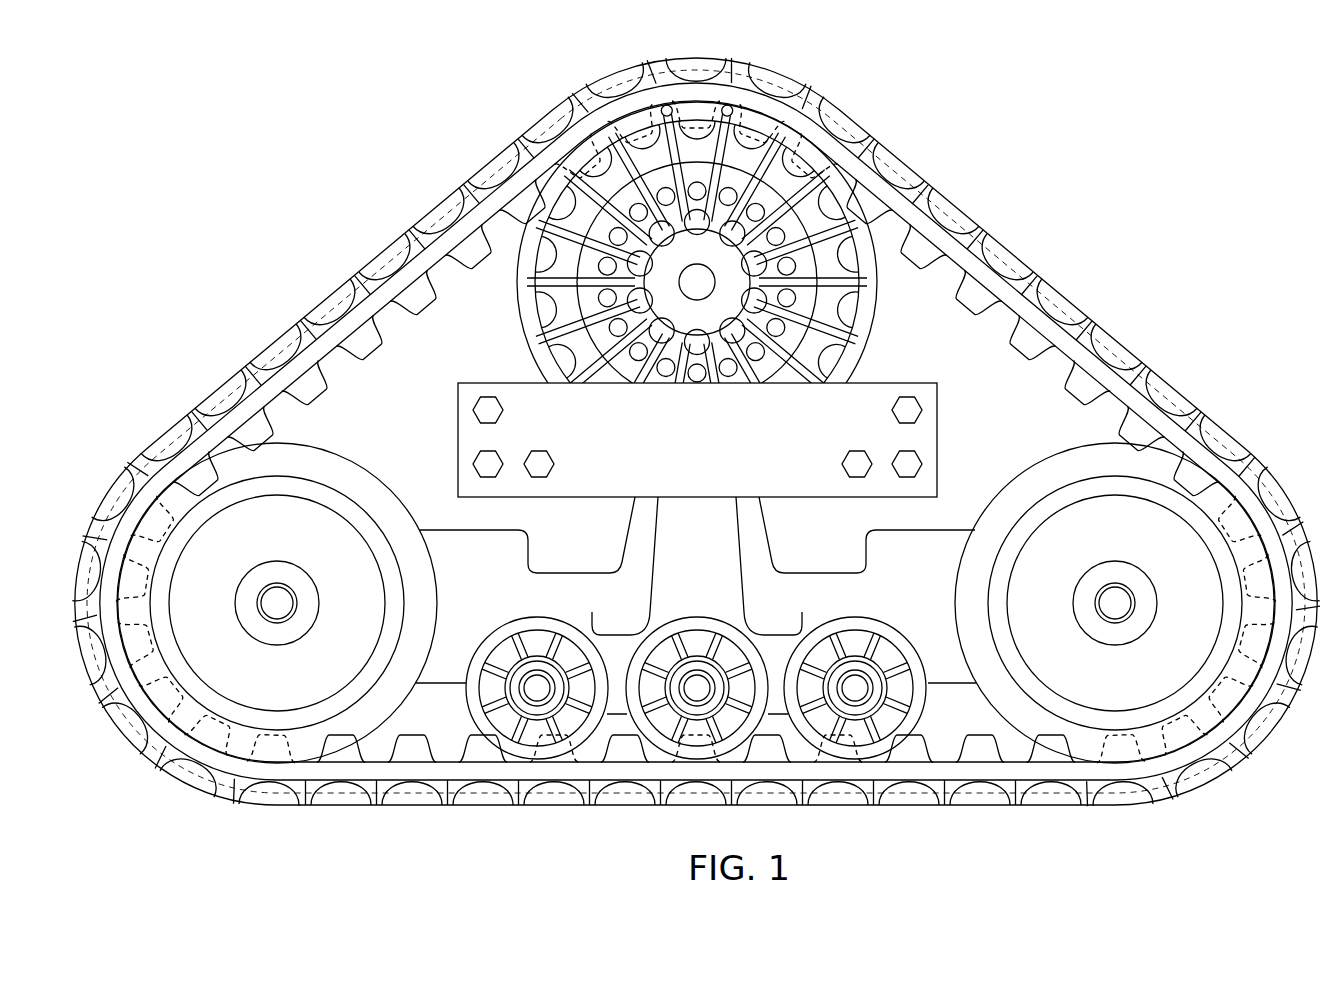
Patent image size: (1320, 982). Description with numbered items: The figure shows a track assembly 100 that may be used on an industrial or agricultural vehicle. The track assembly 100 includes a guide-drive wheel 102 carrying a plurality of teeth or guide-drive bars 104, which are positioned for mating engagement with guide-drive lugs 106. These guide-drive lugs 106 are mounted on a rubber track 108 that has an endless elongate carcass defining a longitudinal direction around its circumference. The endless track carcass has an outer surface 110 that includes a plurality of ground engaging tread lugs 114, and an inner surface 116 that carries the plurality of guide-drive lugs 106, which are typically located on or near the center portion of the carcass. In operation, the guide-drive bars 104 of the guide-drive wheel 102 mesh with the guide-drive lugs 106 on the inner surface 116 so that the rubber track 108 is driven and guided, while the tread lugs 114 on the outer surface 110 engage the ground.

The track assembly 100 is at (368, 153).
The guide-drive wheel 102 is at (665, 252).
The guide-drive bars 104 is at (738, 104).
The guide-drive lugs 106 is at (967, 292).
The rubber track 108 is at (1132, 248).
The outer surface 110 is at (373, 270).
The tread lugs 114 is at (1143, 378).
The inner surface 116 is at (352, 362).